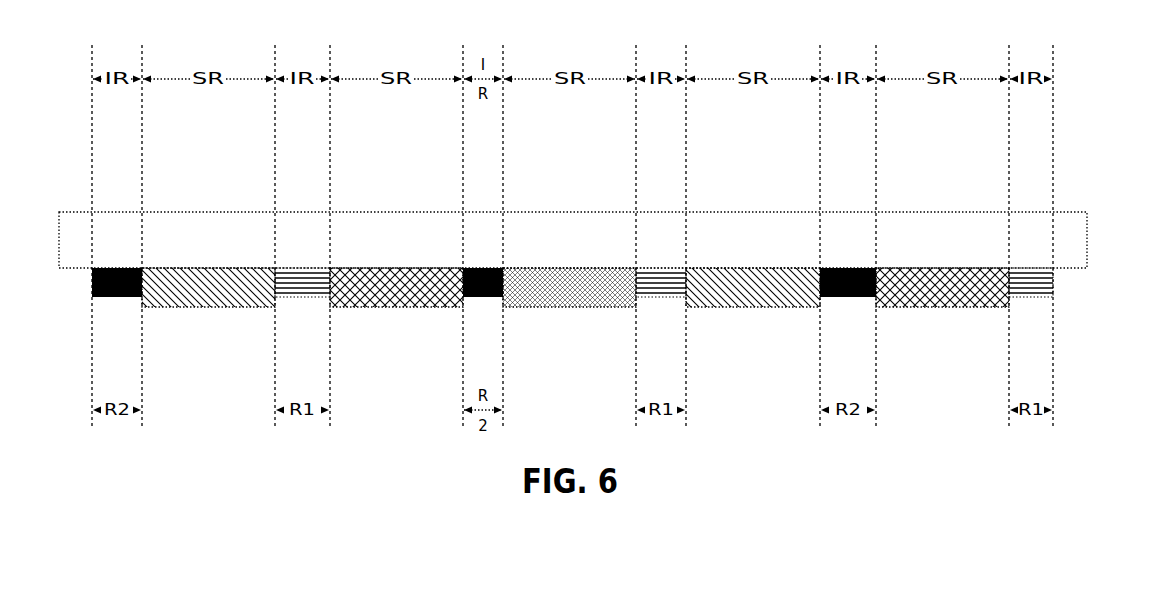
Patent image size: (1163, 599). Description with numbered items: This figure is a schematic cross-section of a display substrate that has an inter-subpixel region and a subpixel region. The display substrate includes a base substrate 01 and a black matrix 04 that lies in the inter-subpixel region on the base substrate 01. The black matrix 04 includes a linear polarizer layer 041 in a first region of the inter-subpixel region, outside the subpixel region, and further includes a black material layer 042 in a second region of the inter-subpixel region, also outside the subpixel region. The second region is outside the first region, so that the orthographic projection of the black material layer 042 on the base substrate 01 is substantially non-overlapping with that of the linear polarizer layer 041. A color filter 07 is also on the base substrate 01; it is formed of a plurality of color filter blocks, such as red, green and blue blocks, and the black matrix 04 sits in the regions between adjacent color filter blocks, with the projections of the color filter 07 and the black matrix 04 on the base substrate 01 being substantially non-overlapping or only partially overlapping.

The base substrate 01 is at (512, 228).
The black matrix 04 is at (618, 329).
The linear polarizer layer 041 is at (1037, 297).
The black material layer 042 is at (475, 298).
The color filter 07 is at (757, 310).